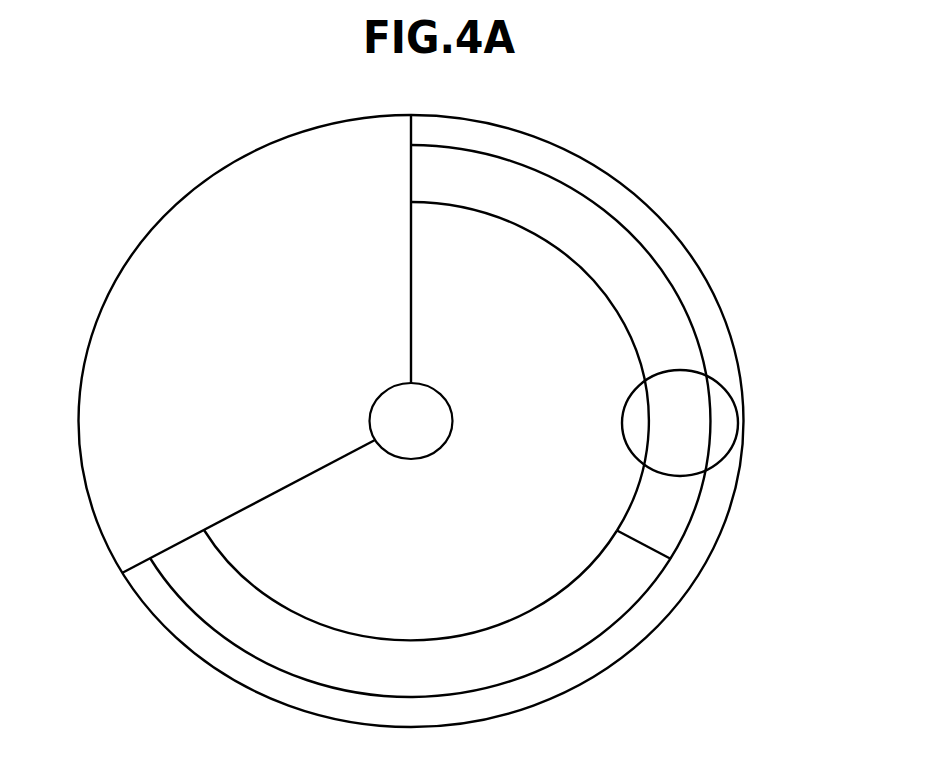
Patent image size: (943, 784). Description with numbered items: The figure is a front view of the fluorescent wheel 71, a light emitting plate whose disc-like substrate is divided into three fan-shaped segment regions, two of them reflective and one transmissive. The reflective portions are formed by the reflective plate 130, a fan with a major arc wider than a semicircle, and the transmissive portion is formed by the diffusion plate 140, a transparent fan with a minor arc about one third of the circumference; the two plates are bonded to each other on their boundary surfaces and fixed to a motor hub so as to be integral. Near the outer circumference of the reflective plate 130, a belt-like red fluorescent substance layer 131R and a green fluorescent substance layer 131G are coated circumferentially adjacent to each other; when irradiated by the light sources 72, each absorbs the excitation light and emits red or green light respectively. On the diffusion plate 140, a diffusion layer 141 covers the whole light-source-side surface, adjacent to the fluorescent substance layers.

The fluorescent wheel 71 is at (657, 195).
The light source 72 is at (708, 443).
The reflective plate 130 is at (563, 165).
The red fluorescent substance layer 131R is at (640, 283).
The green fluorescent substance layer 131G is at (275, 635).
The diffusion plate 140 is at (250, 207).
The diffusion layer 141 is at (163, 300).